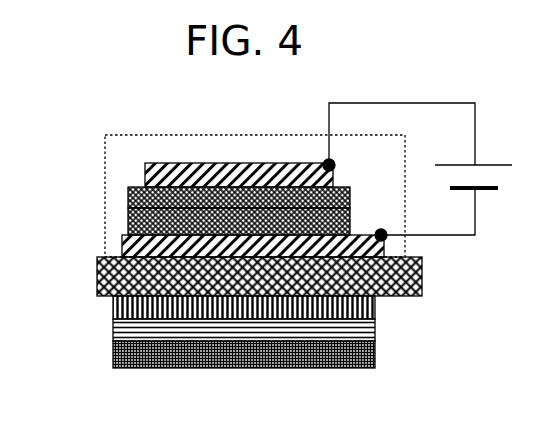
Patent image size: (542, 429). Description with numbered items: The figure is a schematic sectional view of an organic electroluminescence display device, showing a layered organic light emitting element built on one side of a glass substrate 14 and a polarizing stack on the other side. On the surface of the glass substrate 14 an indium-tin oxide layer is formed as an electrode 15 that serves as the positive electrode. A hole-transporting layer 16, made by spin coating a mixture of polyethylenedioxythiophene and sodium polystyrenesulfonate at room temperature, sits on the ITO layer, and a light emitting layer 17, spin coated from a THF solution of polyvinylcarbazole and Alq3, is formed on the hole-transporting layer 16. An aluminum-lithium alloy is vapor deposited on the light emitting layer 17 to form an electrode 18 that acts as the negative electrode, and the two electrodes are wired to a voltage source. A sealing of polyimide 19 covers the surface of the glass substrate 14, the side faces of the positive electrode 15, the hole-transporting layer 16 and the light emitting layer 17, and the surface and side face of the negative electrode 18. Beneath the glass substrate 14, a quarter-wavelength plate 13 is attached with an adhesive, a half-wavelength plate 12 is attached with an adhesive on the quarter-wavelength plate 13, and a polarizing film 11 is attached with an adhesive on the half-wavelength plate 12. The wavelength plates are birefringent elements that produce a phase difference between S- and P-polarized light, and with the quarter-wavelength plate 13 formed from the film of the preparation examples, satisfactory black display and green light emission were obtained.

The polarizing film 11 is at (375, 352).
The half-wavelength plate 12 is at (375, 328).
The quarter-wavelength plate 13 is at (375, 307).
The glass substrate 14 is at (97, 282).
The electrode (positive electrode) 15 is at (121, 248).
The hole-transporting layer 16 is at (128, 225).
The light emitting layer 17 is at (128, 195).
The electrode (negative electrode) 18 is at (147, 172).
The polyimide sealing 19 is at (174, 150).